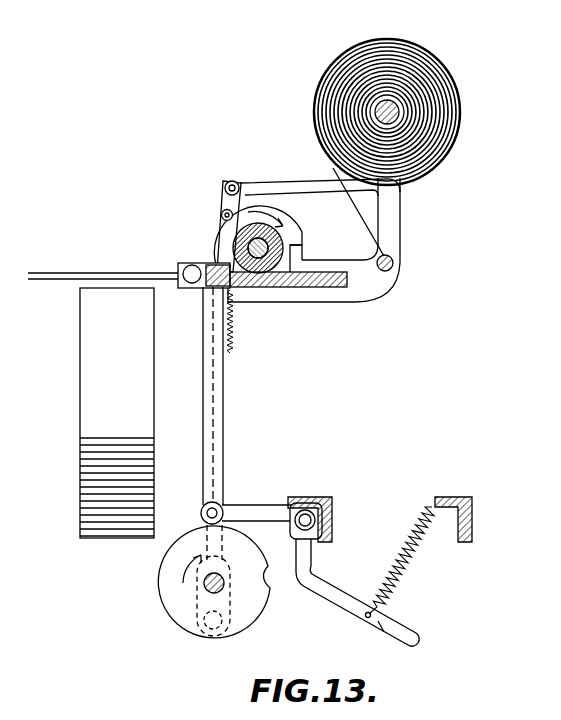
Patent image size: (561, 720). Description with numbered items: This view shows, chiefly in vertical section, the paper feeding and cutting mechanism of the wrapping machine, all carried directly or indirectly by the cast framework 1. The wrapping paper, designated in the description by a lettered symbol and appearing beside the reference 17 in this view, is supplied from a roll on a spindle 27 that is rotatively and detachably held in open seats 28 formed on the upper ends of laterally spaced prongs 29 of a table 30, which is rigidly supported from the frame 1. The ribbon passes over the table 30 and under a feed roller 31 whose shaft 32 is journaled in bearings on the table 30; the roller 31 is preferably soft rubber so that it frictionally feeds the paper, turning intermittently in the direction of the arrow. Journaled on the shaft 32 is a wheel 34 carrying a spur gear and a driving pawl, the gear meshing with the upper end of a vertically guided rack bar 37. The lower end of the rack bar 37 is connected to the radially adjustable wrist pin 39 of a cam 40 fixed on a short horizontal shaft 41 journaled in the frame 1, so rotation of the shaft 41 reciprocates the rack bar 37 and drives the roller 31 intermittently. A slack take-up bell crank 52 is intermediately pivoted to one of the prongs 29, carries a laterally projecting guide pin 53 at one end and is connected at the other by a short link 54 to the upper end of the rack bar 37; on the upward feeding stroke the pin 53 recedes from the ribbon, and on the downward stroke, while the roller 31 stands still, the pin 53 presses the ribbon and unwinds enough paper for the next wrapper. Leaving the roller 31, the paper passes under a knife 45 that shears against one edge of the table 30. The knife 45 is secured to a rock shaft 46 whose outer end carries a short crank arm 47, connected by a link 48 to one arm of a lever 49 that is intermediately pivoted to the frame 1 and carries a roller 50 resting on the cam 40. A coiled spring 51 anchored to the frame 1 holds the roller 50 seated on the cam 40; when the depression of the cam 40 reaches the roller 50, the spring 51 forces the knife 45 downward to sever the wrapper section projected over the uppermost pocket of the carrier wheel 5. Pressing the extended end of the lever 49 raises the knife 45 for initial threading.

The tape roll 17 is at (332, 56).
The spindle 27 is at (430, 64).
The open seats 28 is at (403, 110).
The prongs 29 is at (373, 286).
The table 30 is at (337, 290).
The bell crank 52 is at (334, 183).
The guide pin 53 is at (394, 268).
The feed roller 31 is at (286, 237).
The wheel 34 is at (297, 258).
The roller shaft 32 is at (293, 250).
The rack bar 37 is at (218, 222).
The short link 54 is at (222, 193).
The short crank arm 47 is at (195, 258).
The knife 45 is at (178, 268).
The carrier wheel 5 is at (103, 340).
The rock shaft 46 is at (203, 323).
The link 48 is at (215, 430).
The roller 50 is at (202, 508).
The lever 49 is at (245, 512).
The framework 1 is at (440, 500).
The coiled spring 51 is at (400, 585).
The cam 40 is at (172, 586).
The short horizontal shaft 41 is at (205, 588).
The wrist pin 39 is at (205, 633).